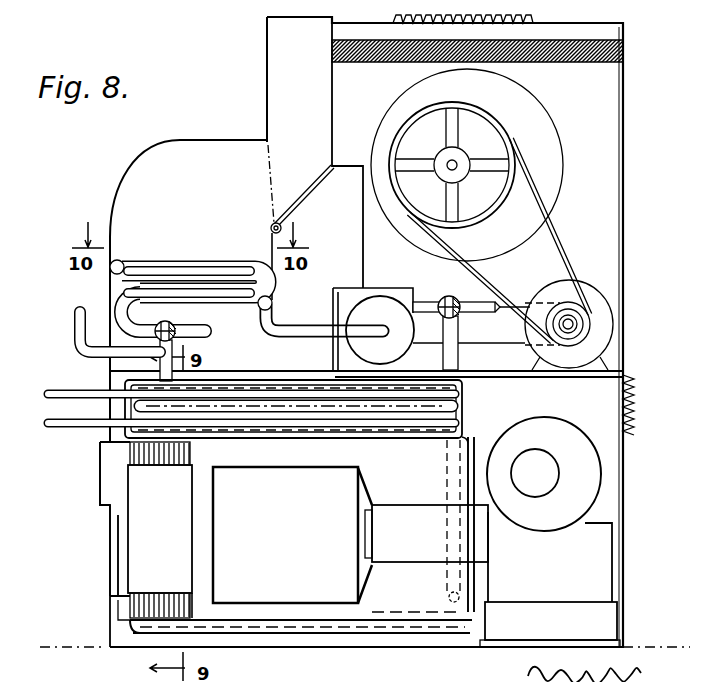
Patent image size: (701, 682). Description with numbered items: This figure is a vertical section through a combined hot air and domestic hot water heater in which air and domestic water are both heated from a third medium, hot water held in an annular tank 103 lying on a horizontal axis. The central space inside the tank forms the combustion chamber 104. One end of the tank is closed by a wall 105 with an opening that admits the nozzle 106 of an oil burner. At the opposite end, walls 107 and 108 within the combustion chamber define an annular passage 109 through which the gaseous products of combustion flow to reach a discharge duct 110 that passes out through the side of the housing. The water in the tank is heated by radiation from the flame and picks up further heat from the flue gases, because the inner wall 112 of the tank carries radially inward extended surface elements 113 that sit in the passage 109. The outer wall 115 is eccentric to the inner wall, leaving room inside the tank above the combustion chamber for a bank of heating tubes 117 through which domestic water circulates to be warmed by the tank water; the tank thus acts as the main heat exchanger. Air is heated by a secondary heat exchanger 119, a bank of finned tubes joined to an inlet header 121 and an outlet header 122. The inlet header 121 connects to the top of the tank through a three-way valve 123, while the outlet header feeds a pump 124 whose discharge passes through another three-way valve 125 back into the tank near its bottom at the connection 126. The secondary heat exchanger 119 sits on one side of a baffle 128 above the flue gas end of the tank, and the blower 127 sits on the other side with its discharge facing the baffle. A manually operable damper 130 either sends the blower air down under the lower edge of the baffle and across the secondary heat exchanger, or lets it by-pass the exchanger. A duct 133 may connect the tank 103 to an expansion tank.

The annular tank 103 is at (283, 630).
The combustion chamber 104 is at (285, 464).
The wall 105 is at (476, 448).
The nozzle 106 is at (424, 510).
The wall 107 is at (146, 468).
The wall 108 is at (131, 531).
The annular passage 109 is at (194, 602).
The discharge duct 110 is at (100, 470).
The inner wall 112 is at (372, 617).
The extended surface elements 113 is at (128, 605).
The outer wall 115 is at (382, 638).
The heating tubes 117 is at (258, 385).
The secondary heat exchanger 119 is at (199, 258).
The inlet header 121 is at (110, 288).
The outlet header 122 is at (273, 302).
The three-way valve 123 is at (177, 326).
The pump 124 is at (378, 300).
The three-way valve 125 is at (448, 297).
The tank connection 126 is at (448, 600).
The blower 127 is at (535, 120).
The baffle 128 is at (272, 248).
The damper 130 is at (318, 164).
The duct 133 is at (76, 336).